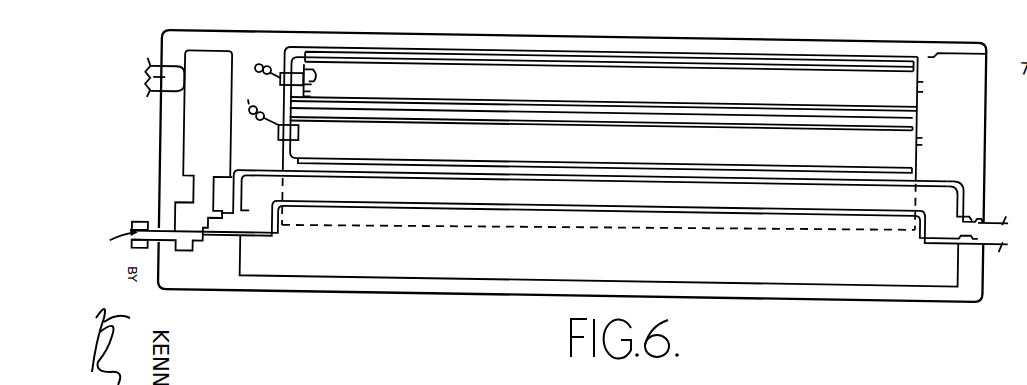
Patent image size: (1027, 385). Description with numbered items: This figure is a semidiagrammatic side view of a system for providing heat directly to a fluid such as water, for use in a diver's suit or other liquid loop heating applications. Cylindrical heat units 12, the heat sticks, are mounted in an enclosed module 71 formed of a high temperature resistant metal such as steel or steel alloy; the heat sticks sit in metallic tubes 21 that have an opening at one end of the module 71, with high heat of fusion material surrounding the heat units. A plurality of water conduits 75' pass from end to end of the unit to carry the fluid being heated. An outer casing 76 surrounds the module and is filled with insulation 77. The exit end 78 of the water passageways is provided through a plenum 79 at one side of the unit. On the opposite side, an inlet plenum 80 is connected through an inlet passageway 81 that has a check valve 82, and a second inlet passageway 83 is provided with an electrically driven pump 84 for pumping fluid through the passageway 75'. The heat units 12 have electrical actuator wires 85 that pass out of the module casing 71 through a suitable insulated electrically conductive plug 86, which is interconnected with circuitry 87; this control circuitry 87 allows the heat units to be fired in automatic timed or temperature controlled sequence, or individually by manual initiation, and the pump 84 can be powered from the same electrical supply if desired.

The cylindrical heat unit 12 is at (466, 84).
The metallic tube 21 is at (686, 59).
The enclosed module 71 is at (372, 45).
The water conduit 75' is at (576, 186).
The outer casing 76 is at (334, 35).
The insulation 77 is at (555, 37).
The exit end 78 is at (1000, 201).
The plenum 79 is at (938, 181).
The inlet plenum 80 is at (261, 220).
The inlet passageway 81 is at (158, 230).
The check valve 82 is at (111, 230).
The second inlet passageway 83 is at (153, 66).
The electrically driven pump 84 is at (198, 54).
The electrical actuator wire 85 is at (304, 60).
The insulated electrically conductive plug 86 is at (283, 71).
The circuitry 87 is at (254, 63).